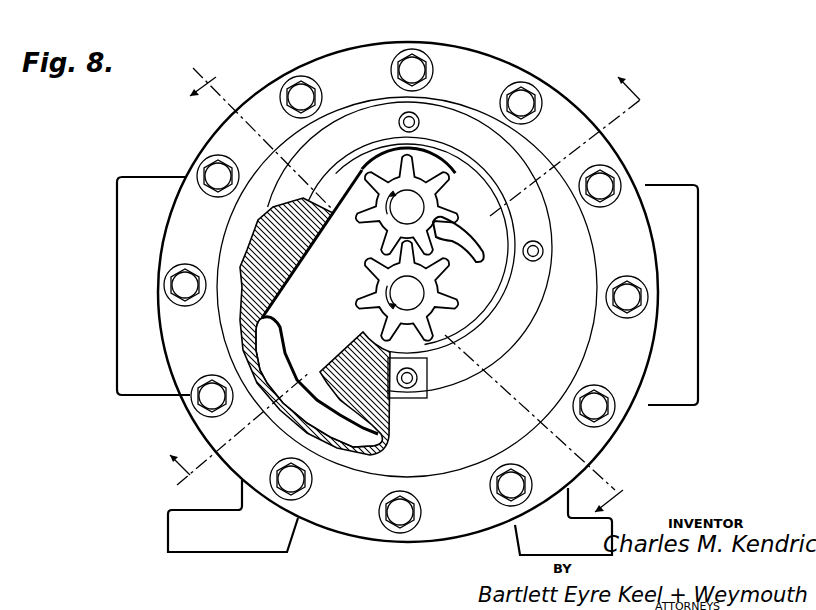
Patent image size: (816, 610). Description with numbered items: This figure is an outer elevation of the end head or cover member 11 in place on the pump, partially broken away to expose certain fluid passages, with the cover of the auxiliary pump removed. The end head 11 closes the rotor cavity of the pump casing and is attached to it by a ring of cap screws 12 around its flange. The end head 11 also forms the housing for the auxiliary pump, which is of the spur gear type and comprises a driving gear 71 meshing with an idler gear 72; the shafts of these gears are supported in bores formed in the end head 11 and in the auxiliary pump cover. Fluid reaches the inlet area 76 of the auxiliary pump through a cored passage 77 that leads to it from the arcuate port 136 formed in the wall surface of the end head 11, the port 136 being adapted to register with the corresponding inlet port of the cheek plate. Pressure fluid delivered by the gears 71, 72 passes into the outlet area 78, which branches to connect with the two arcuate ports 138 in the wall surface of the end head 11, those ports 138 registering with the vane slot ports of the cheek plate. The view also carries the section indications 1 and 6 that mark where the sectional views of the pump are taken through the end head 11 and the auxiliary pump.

The section line 1- 1 is at (412, 286).
The section line 6- 6 is at (397, 269).
The end head or cover member 11 is at (597, 148).
The cap screws 12 is at (415, 65).
The driving gear 71 is at (433, 395).
The idler gear 72 is at (444, 172).
The inlet area 76 is at (347, 284).
The cored passage 77 is at (312, 331).
The outlet area 78 is at (421, 179).
The arcuate port 136 is at (366, 437).
The arcuate ports 138 is at (483, 261).